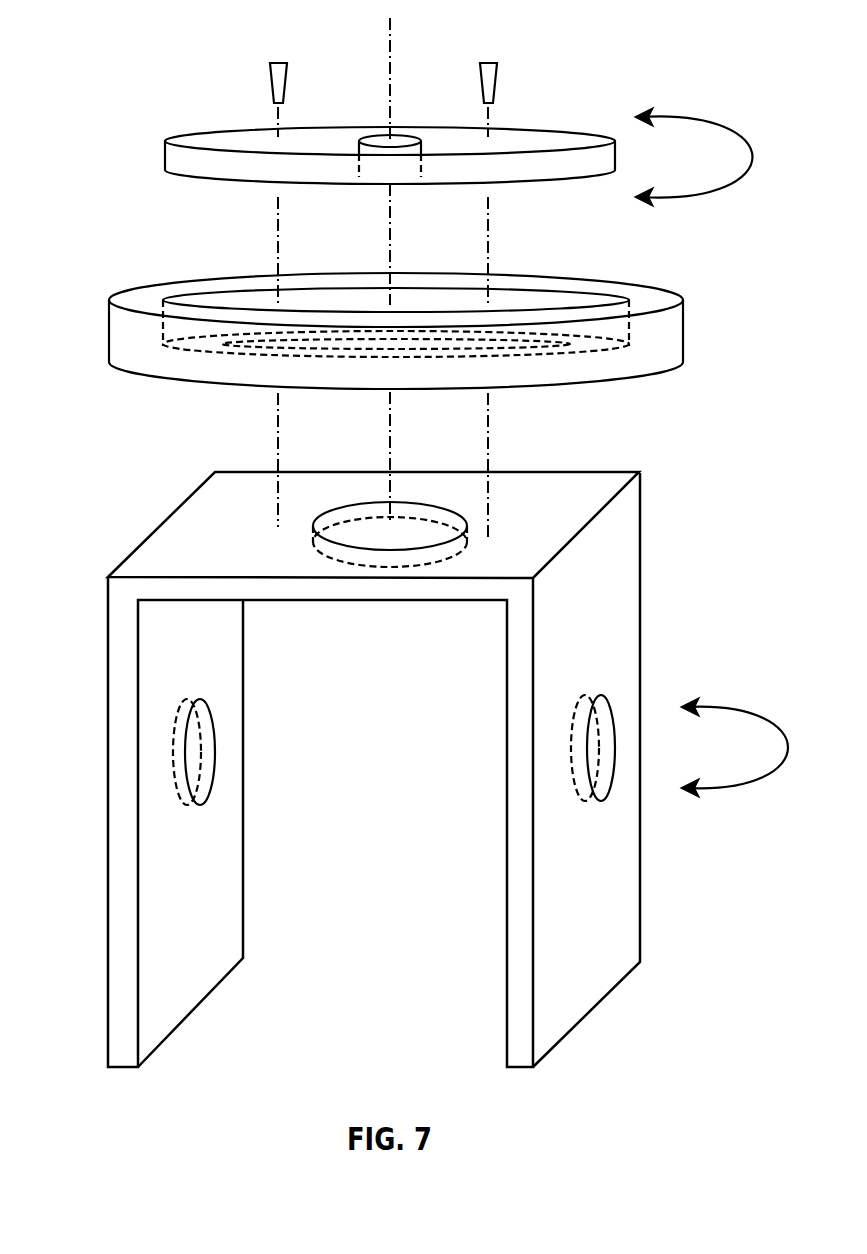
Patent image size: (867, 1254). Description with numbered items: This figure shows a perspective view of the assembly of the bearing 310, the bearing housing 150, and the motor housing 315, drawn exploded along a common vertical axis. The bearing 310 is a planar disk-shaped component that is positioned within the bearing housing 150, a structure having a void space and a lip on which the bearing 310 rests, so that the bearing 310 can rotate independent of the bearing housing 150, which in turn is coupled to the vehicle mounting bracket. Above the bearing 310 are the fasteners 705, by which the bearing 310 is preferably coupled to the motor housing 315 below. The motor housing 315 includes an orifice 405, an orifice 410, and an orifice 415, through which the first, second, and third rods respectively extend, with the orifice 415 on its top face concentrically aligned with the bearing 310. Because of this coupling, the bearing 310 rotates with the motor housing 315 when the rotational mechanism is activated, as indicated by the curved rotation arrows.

The fasteners 705 is at (270, 72).
The bearing 310 is at (165, 150).
The bearing housing 150 is at (109, 333).
The motor housing 315 is at (201, 565).
The orifice 415 is at (468, 532).
The orifice 410 is at (192, 699).
The orifice 405 is at (593, 695).